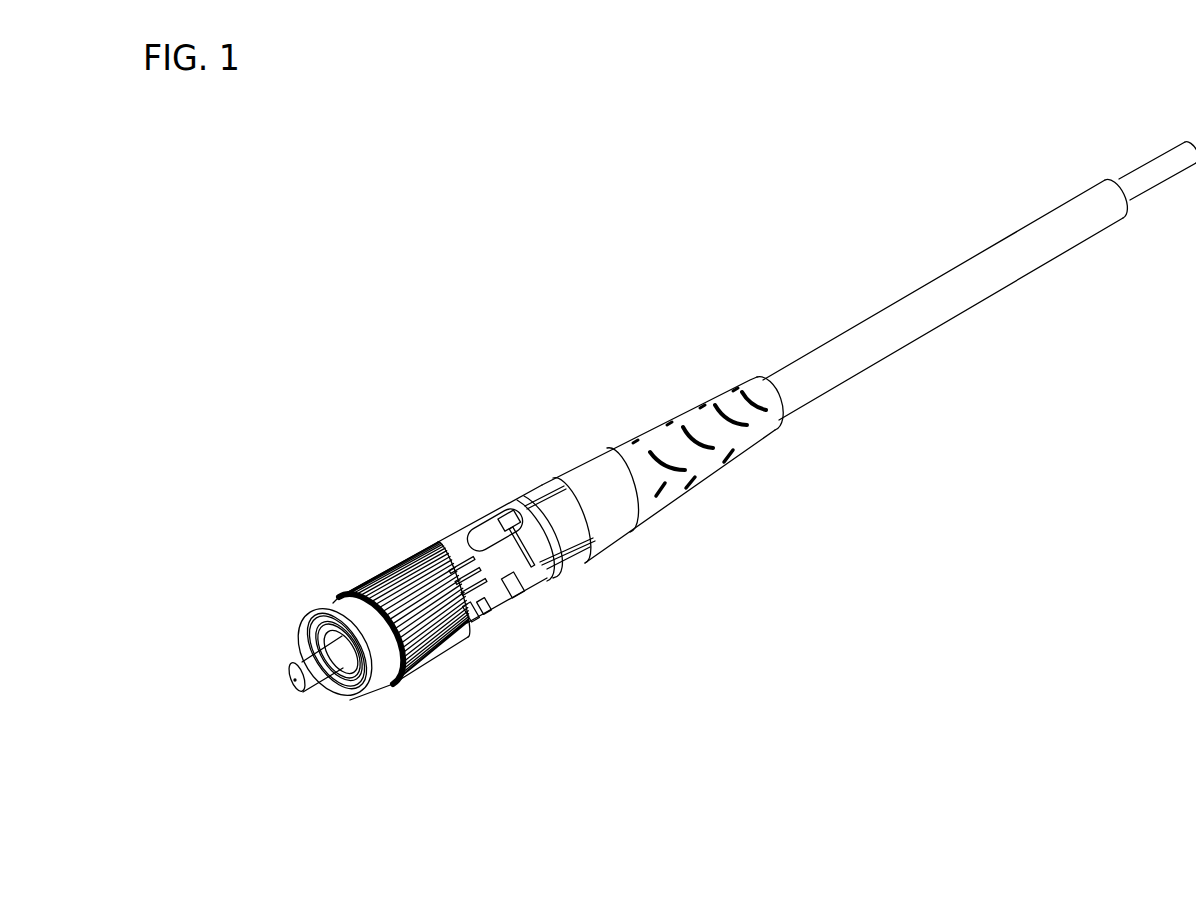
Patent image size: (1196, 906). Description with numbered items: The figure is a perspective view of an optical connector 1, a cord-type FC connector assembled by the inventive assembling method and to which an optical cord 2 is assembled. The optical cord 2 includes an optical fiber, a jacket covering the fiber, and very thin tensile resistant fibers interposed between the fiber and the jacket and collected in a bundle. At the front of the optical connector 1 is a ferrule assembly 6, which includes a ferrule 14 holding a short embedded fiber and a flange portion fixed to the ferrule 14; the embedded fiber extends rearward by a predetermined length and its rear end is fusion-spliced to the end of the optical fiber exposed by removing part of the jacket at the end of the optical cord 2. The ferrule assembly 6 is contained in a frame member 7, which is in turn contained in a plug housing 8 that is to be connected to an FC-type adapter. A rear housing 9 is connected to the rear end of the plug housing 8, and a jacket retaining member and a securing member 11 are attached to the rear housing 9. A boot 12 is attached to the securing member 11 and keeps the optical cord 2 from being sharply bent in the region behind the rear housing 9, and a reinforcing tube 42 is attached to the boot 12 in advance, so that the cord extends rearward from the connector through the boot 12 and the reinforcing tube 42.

The optical connector 1 is at (527, 372).
The optical cord 2 is at (1147, 168).
The ferrule assembly 6 is at (290, 653).
The frame member 7 is at (365, 696).
The plug housing 8 is at (377, 598).
The rear housing 9 is at (474, 538).
The securing member 11 is at (530, 492).
The boot 12 is at (599, 482).
The ferrule 14 is at (316, 675).
The reinforcing tube 42 is at (890, 320).